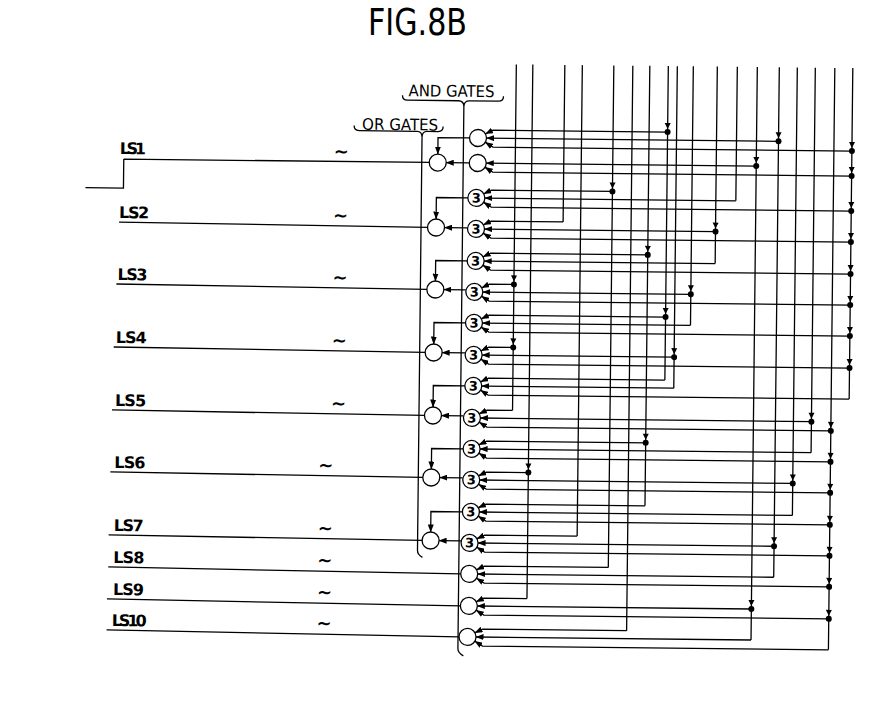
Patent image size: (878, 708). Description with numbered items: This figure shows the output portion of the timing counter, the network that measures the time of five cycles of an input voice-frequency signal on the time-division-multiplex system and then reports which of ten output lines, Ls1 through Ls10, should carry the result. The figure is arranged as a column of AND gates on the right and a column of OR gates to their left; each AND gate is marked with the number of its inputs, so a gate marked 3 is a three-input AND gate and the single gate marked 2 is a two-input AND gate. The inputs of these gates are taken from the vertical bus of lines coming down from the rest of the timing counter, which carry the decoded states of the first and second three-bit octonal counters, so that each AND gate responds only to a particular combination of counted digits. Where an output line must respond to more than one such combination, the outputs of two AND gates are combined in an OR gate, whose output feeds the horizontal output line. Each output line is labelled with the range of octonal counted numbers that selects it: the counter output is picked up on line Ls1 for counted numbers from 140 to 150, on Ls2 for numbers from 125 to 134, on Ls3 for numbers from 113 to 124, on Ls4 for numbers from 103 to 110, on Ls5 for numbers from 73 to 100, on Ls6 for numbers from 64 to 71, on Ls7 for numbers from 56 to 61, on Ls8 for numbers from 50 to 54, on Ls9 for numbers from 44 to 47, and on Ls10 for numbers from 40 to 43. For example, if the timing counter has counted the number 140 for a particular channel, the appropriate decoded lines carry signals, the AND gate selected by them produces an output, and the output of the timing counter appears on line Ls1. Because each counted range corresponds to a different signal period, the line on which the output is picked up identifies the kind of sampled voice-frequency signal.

The three-input AND gate 3 is at (477, 137).
The two-input AND gate 2 is at (477, 162).
The counted number 140 is at (257, 165).
The counted number 150 is at (399, 156).
The counted number 125 is at (273, 214).
The counted number 134 is at (398, 221).
The counted number 113 is at (271, 276).
The upper count limit for LS3 124 is at (397, 283).
The counted number 103 is at (270, 339).
The counted number 110 is at (396, 346).
The counted number 73 is at (268, 402).
The counted number 100 is at (395, 409).
The counted number 64 is at (266, 464).
The counted number 71 is at (388, 470).
The counted number 56 is at (266, 527).
The counted number 61 is at (388, 533).
The counted number 50 is at (284, 560).
The counted number 54 is at (406, 565).
The counted number 44 is at (284, 592).
The counted number 47 is at (406, 597).
The counted number 40 is at (283, 623).
The counted number 43 is at (405, 628).